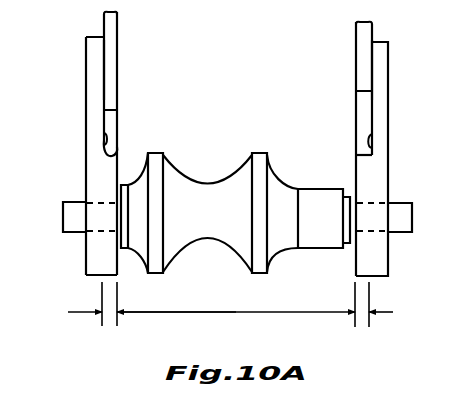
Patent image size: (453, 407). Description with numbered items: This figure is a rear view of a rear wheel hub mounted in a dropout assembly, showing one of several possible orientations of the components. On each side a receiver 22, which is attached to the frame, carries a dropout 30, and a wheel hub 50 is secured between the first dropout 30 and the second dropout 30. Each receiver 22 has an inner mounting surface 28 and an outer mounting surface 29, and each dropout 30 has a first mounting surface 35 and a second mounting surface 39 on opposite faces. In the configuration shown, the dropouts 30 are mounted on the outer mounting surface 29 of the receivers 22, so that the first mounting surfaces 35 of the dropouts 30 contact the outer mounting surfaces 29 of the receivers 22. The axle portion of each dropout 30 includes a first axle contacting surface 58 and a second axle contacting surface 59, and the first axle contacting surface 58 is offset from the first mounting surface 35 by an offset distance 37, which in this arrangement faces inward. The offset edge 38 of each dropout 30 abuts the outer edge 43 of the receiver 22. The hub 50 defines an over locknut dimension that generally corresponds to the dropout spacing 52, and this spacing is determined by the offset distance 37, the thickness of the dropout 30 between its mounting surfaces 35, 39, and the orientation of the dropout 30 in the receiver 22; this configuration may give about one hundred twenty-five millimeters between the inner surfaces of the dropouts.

The receiver 22 is at (110, 30).
The inner mounting surface 28 is at (120, 60).
The outer mounting surface 29 is at (104, 72).
The dropout 30 is at (92, 176).
The first mounting surface 35 is at (117, 110).
The offset distance 37 is at (232, 304).
The offset edge 38 is at (104, 140).
The second mounting surface 39 is at (86, 130).
The outer edge 43 is at (117, 152).
The wheel hub 50 is at (187, 203).
The dropout spacing 52 is at (258, 306).
The first axle contacting surface 58 is at (119, 262).
The second axle contacting surface 59 is at (86, 254).